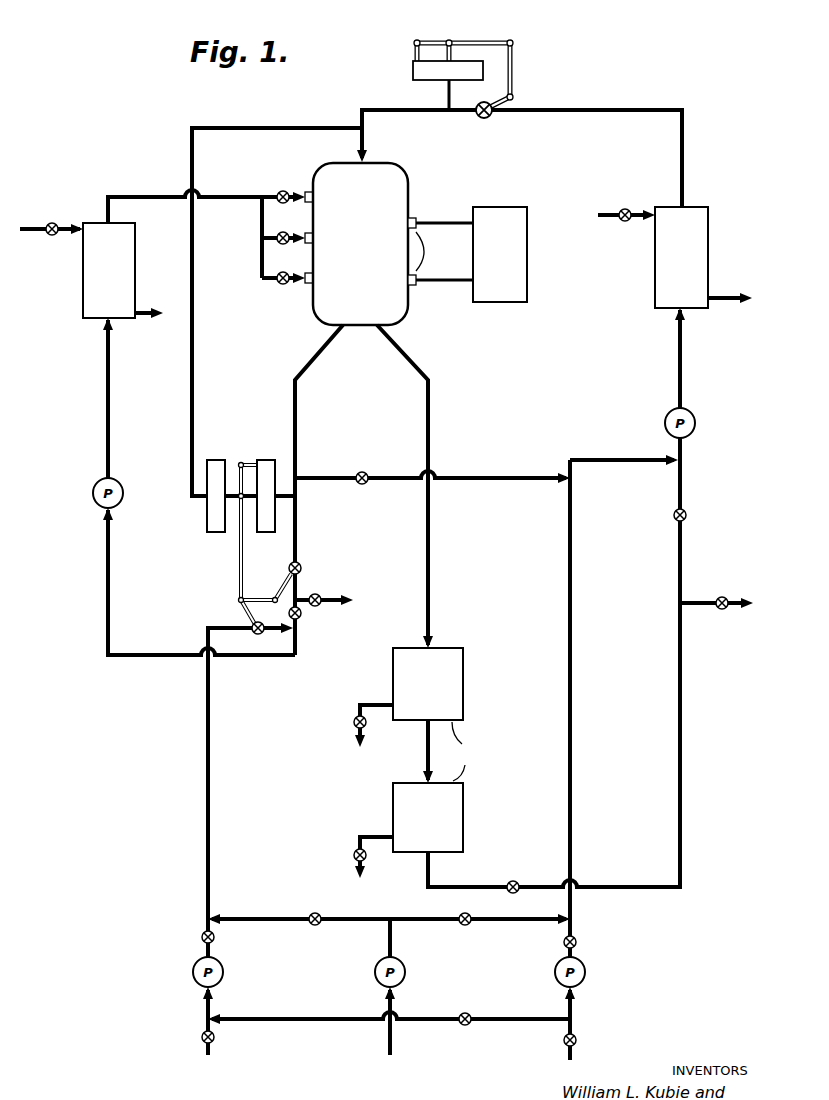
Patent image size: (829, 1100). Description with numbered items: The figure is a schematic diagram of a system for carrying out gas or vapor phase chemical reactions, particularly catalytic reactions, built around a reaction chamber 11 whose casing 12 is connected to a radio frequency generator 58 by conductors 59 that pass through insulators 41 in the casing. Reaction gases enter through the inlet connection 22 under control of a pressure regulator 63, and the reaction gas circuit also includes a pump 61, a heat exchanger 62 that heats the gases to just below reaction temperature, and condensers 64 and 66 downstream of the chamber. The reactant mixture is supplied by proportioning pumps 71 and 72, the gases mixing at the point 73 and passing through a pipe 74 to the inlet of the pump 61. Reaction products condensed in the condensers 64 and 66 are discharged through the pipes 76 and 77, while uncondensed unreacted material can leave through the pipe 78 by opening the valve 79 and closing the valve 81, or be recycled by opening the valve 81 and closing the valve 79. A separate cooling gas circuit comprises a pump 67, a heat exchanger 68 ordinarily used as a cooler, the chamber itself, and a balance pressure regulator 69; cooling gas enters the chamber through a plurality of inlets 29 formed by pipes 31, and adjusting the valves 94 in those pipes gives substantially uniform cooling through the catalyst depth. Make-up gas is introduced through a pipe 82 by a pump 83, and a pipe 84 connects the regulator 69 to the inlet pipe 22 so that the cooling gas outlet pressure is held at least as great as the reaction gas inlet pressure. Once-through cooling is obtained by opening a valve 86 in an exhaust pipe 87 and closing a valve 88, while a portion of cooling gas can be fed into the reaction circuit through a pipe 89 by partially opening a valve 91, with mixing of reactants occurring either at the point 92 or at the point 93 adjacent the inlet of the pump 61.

The reaction chamber 11 is at (340, 183).
The casing 12 is at (410, 179).
The inlet connection 22 is at (366, 146).
The inlets 29 is at (306, 185).
The pipes 31 is at (290, 181).
The insulators 41 is at (426, 252).
The radio frequency generator 58 is at (528, 222).
The conductors 59 is at (441, 222).
The pump 61 is at (697, 425).
The heat exchanger 62 is at (654, 282).
The pressure regulator 63 is at (412, 69).
The condenser 64 is at (466, 684).
The condenser 66 is at (466, 824).
The pump 67 is at (94, 488).
The heat exchanger 68 is at (135, 256).
The balance pressure regulator 69 is at (235, 464).
The proportioning pump 71 is at (406, 973).
The proportioning pump 72 is at (587, 975).
The point 73 is at (577, 924).
The pipe 74 is at (575, 654).
The pipe 76 is at (354, 707).
The pipe 77 is at (357, 836).
The pipe 78 is at (710, 608).
The valve 79 is at (727, 596).
The valve 81 is at (688, 514).
The pipe 82 is at (235, 770).
The pump 83 is at (192, 973).
The pipe 84 is at (193, 289).
The valve 86 is at (321, 594).
The exhaust pipe 87 is at (330, 604).
The valve 88 is at (300, 618).
The pipe 89 is at (335, 476).
The valve 91 is at (366, 474).
The point 92 is at (205, 920).
The point 93 is at (576, 482).
The valves 94 is at (290, 202).